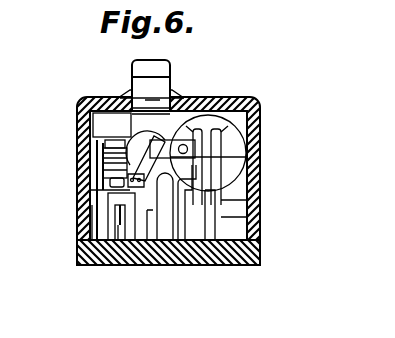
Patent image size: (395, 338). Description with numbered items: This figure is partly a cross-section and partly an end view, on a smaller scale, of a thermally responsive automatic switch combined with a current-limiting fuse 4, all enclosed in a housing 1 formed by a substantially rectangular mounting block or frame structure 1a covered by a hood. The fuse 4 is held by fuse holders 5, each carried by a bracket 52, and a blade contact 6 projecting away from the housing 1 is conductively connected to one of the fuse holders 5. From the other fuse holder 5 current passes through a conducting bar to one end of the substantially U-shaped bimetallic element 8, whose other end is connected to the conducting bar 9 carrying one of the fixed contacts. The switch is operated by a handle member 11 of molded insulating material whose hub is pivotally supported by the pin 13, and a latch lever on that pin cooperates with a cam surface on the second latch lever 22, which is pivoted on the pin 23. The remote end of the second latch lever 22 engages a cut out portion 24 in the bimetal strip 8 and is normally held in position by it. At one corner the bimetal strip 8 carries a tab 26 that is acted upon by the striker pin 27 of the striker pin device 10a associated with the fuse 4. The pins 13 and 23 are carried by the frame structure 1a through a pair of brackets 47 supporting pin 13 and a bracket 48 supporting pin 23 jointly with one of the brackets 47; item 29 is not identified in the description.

The housing 1 is at (279, 96).
The frame structure 1a is at (260, 253).
The current-limiting fuse 4 is at (244, 137).
The fuse holder 5 is at (247, 157).
The blade contact 6 is at (170, 265).
The bimetallic element 8 is at (140, 265).
The conducting bar 9 is at (95, 265).
The striker pin device 10a is at (186, 100).
The handle member 11 is at (132, 69).
The pin 13 is at (97, 156).
The second latch lever 22 is at (118, 265).
The pin 23 is at (90, 189).
The cut out portion 24 is at (95, 199).
The tab 26 is at (100, 137).
The striker pin 27 is at (131, 140).
The housing boss 29 is at (232, 100).
The brackets 47 is at (97, 176).
The bracket 48 is at (103, 146).
The bracket 52 is at (247, 197).